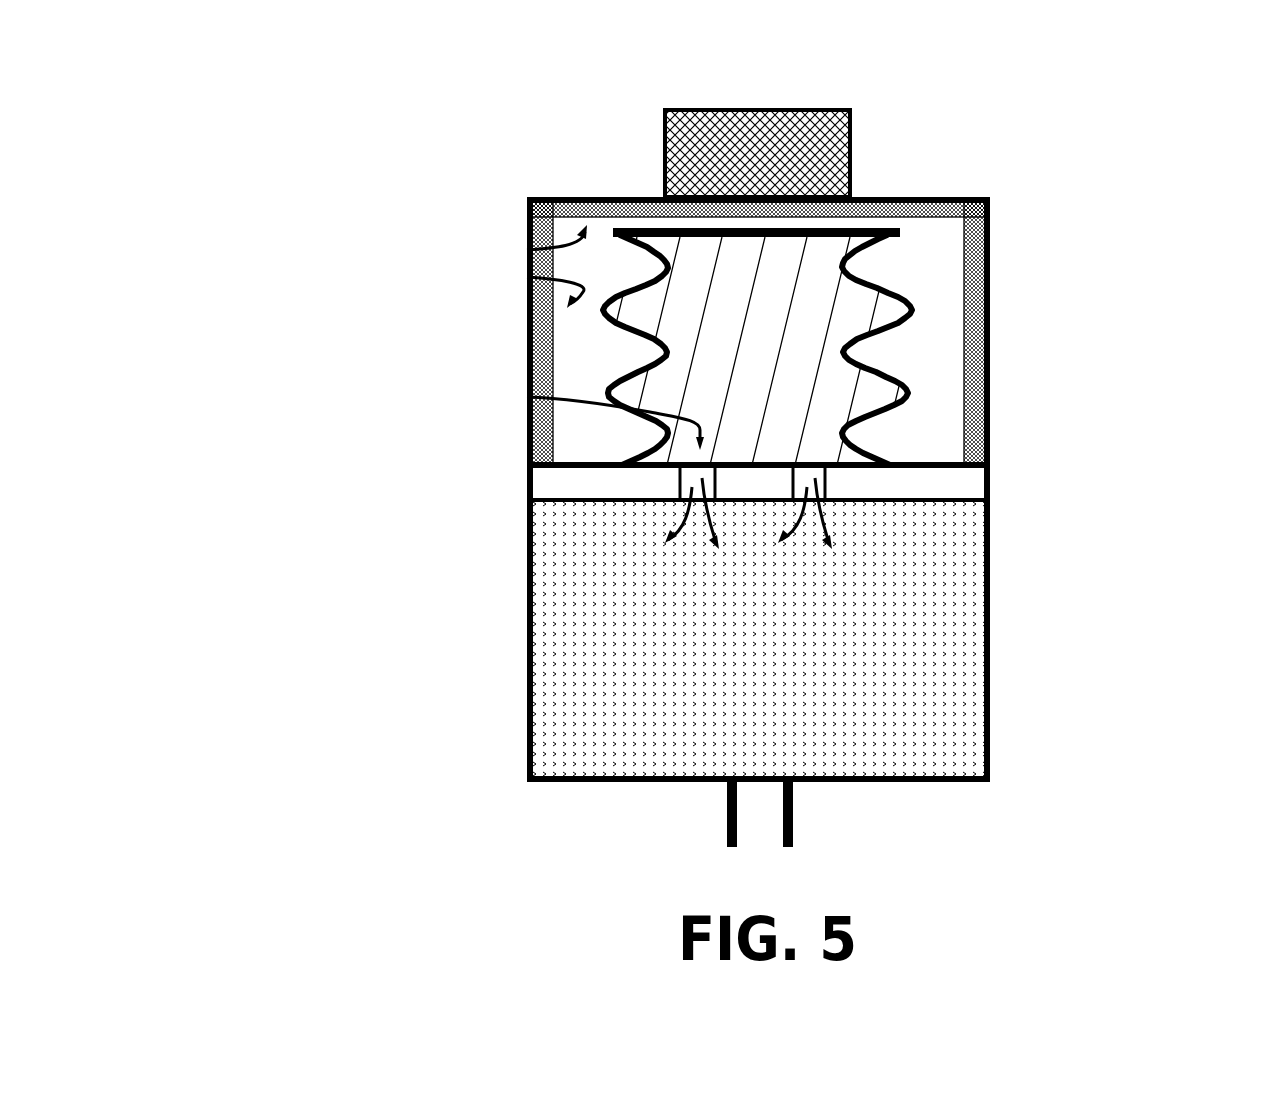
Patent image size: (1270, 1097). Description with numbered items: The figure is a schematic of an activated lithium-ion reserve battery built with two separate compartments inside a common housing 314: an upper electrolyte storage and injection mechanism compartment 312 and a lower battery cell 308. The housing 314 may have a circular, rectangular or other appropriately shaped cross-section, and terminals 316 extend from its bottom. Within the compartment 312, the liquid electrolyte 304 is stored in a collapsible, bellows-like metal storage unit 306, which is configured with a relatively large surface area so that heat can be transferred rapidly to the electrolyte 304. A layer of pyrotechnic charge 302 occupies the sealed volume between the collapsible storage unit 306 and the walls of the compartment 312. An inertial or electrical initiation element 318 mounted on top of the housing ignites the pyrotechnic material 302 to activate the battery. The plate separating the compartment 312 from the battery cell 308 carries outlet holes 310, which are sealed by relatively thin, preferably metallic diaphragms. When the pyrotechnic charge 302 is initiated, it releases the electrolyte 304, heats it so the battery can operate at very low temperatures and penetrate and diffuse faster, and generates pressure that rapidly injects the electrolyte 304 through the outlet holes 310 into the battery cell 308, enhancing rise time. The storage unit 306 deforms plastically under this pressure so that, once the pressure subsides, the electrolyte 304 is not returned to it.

The electrolyte storage and injection mechanism compartment 312 is at (412, 101).
The pyrotechnic charge 302 is at (527, 250).
The liquid electrolyte 304 is at (802, 378).
The collapsible storage container 306 is at (898, 251).
The battery cell 308 is at (915, 707).
The outlet holes 310 is at (527, 397).
The housing 314 is at (517, 630).
The terminals 316 is at (827, 823).
The initiation element 318 is at (832, 146).